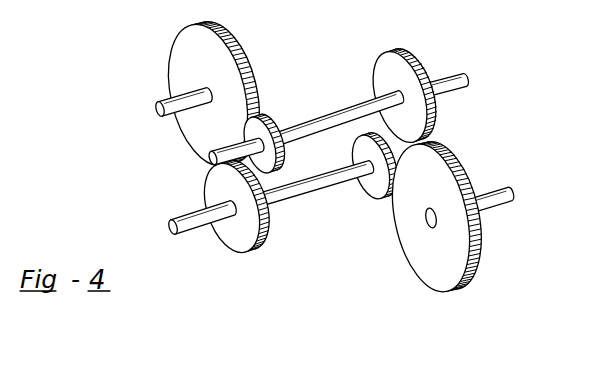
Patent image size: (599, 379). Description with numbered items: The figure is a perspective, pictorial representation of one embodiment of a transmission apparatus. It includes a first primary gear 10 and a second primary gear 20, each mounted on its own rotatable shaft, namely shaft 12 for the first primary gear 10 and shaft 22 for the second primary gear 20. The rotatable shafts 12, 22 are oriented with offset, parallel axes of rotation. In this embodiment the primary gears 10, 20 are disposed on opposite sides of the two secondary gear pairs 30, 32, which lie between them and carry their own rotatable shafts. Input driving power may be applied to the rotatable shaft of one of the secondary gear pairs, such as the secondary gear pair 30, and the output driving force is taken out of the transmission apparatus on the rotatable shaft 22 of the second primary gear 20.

The first primary gear 10 is at (174, 50).
The rotatable shaft 12 is at (157, 101).
The second primary gear 20 is at (433, 270).
The rotatable shaft 22 is at (520, 160).
The secondary gear pair 30 is at (302, 236).
The secondary gear pair 32 is at (284, 27).